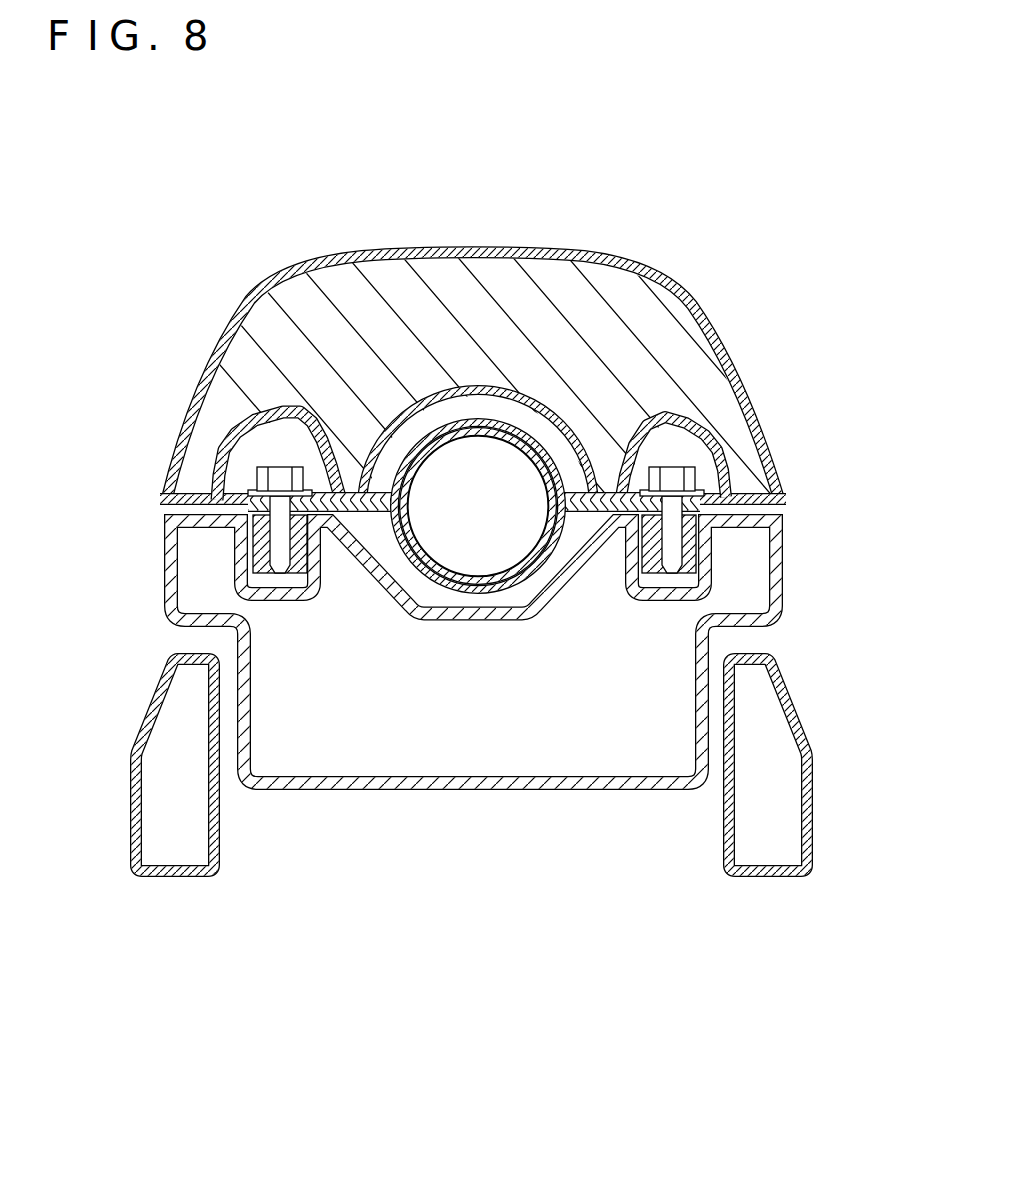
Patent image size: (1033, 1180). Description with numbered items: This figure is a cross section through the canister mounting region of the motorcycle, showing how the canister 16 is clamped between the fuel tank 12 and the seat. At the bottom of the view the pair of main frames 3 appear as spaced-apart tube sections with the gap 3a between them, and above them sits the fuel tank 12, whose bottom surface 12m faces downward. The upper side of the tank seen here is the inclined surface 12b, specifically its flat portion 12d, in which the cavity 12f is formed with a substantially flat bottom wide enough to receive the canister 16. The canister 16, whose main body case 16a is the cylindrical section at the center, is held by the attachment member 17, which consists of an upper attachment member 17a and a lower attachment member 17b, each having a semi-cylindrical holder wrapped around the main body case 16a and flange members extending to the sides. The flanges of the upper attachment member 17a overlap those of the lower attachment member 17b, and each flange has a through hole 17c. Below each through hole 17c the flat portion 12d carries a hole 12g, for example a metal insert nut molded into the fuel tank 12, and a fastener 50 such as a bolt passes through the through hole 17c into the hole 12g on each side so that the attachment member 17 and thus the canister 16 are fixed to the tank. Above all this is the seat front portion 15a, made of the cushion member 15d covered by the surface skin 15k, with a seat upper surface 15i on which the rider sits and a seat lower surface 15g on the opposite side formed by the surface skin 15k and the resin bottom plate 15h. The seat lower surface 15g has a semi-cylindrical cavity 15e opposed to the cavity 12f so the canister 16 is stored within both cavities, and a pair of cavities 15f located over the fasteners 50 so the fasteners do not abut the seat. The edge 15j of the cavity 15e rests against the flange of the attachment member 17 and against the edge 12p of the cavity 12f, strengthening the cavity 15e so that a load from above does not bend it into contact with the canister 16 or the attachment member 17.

The main frame 3 is at (770, 880).
The gap 3a is at (333, 843).
The fuel tank 12 is at (586, 801).
The inclined surface 12b is at (247, 510).
The flat portion 12d is at (134, 559).
The cavity 12f is at (427, 622).
The hole 12g is at (662, 602).
The bottom surface 12m is at (470, 792).
The edge 12p is at (347, 529).
The seat front portion 15a is at (498, 226).
The cushion member 15d is at (453, 300).
The cavity 15e is at (577, 443).
The cavity 15f is at (723, 443).
The seat lower surface 15g is at (780, 519).
The bottom plate 15h is at (560, 440).
The seat upper surface 15i is at (389, 250).
The edge 15j is at (340, 487).
The surface skin 15k is at (557, 250).
The canister 16 is at (490, 495).
The main body case 16a is at (463, 575).
The attachment member 17 is at (530, 589).
The upper attachment member 17a is at (340, 258).
The lower attachment member 17b is at (490, 593).
The through hole 17c is at (707, 540).
The fastener 50 is at (700, 478).